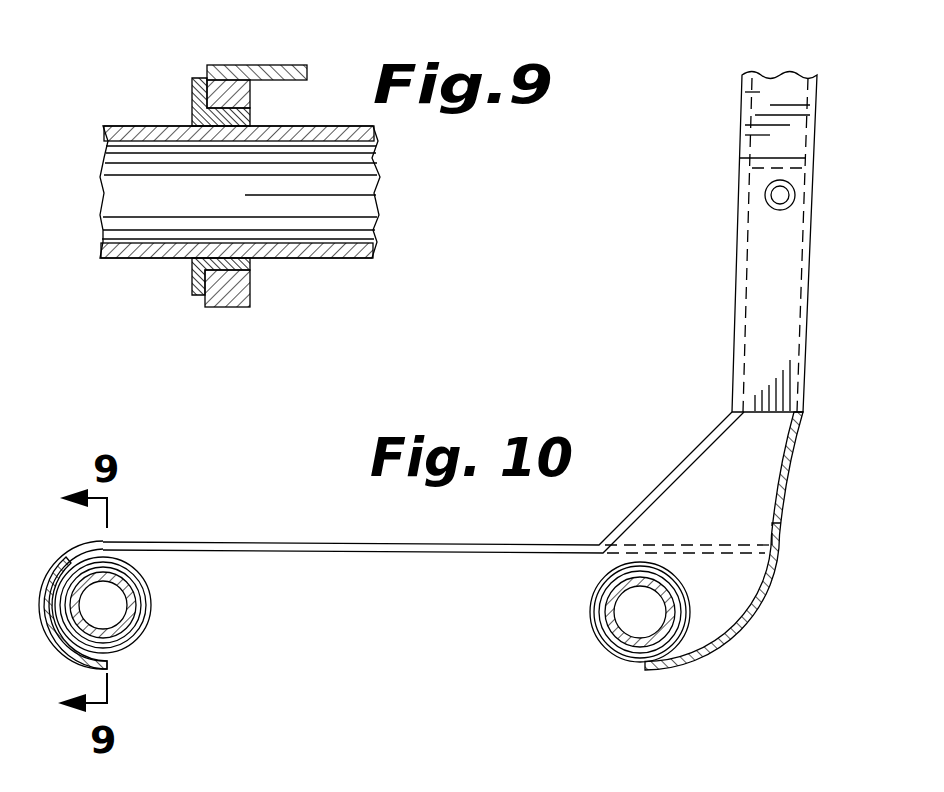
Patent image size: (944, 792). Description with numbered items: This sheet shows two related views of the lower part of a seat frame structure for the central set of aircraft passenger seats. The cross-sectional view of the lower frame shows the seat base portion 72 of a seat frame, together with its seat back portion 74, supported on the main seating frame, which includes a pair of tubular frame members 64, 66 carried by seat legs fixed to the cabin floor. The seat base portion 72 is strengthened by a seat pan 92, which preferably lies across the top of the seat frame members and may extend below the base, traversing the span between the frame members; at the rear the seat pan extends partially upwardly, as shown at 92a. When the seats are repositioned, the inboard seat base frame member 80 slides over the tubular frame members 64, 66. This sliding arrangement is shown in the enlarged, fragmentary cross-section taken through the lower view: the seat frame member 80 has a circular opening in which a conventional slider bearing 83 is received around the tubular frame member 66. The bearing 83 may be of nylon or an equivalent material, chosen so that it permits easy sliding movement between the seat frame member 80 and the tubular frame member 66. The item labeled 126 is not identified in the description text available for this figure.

In FIG. 9, the tubular frame member 66 is at (300, 127).
In FIG. 10, the tubular frame member 66 is at (128, 627).
In FIG. 9, the seat base frame member 80 is at (232, 65).
In FIG. 9, the slider bearing 83 is at (192, 102).
In FIG. 10, the seat back portion 74 is at (722, 251).
In FIG. 10, the seat pan 92 is at (275, 543).
In FIG. 10, the upwardly extending rear portion of seat pan 92a is at (781, 524).
In FIG. 10, the tubular frame member 64 is at (633, 640).
In FIG. 10, the seat base portion 72 is at (440, 598).
In FIG. 10, the mounting assembly 126 is at (353, 612).